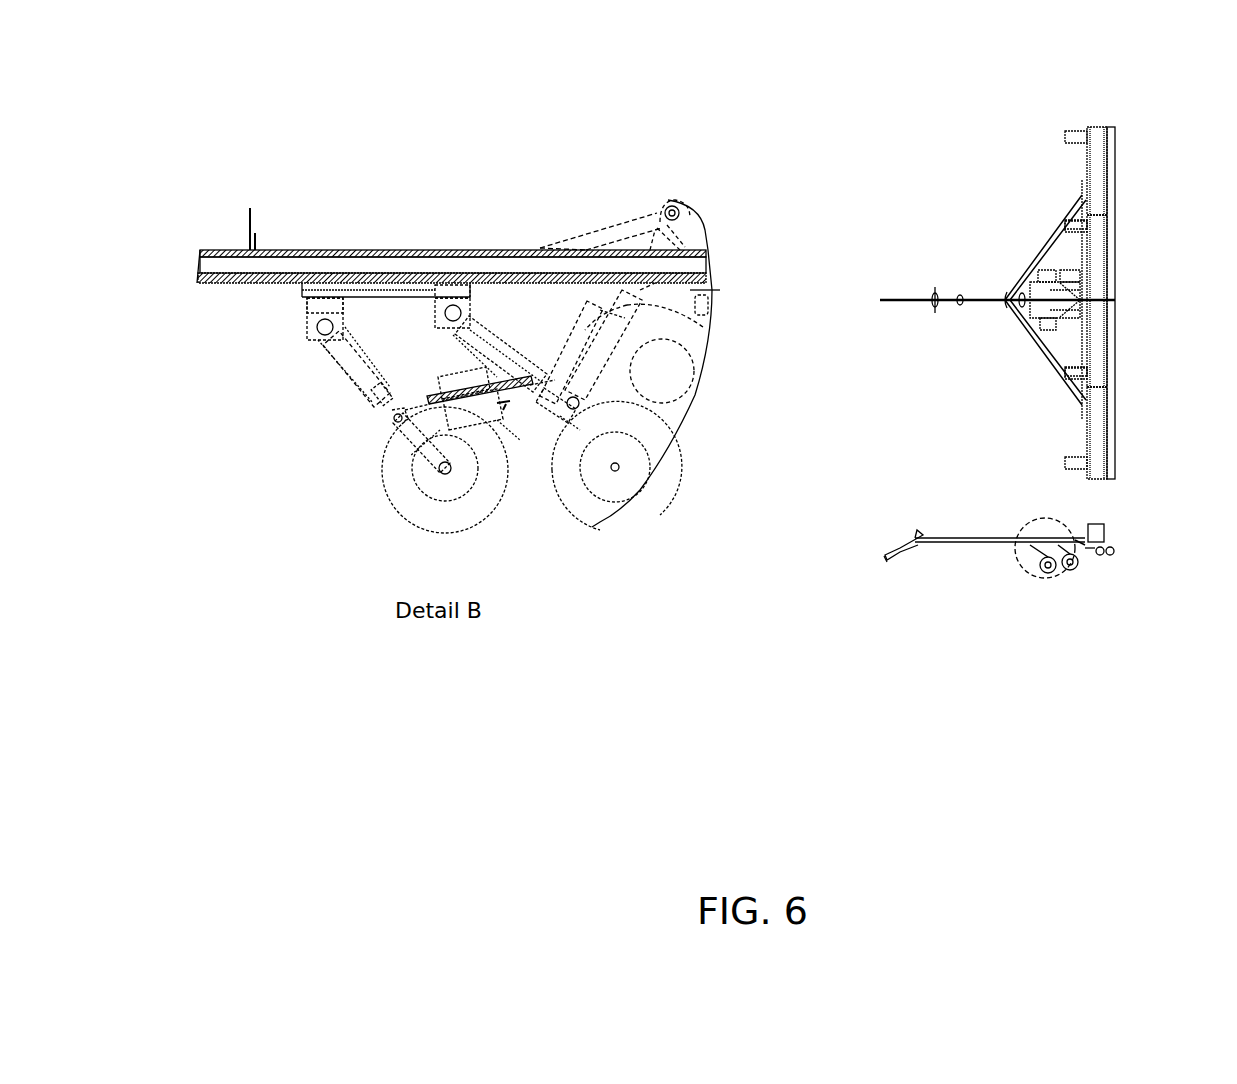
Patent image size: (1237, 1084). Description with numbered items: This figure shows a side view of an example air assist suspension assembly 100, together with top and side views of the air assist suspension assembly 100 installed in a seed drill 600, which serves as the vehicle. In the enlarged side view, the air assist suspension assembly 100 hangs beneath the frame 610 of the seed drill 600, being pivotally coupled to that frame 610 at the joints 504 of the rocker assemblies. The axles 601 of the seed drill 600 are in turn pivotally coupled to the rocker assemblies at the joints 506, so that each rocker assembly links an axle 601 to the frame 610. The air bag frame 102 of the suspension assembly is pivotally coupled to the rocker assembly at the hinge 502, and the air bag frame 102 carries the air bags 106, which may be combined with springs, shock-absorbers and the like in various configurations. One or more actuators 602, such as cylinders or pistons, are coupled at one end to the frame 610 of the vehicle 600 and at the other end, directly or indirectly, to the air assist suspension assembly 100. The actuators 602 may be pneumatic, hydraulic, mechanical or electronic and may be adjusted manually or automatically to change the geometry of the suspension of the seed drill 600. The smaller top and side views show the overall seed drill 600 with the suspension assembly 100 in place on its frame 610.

The air assist suspension assembly 100 is at (470, 205).
The air bag frame 102 is at (420, 413).
The air bags 106 is at (483, 413).
The hinge 502 is at (395, 419).
The joints 504 is at (453, 313).
The joints 506 is at (443, 467).
The seed drill 600 is at (1135, 117).
The axles 601 is at (616, 467).
The actuators 602 is at (618, 318).
The frame 610 is at (328, 260).